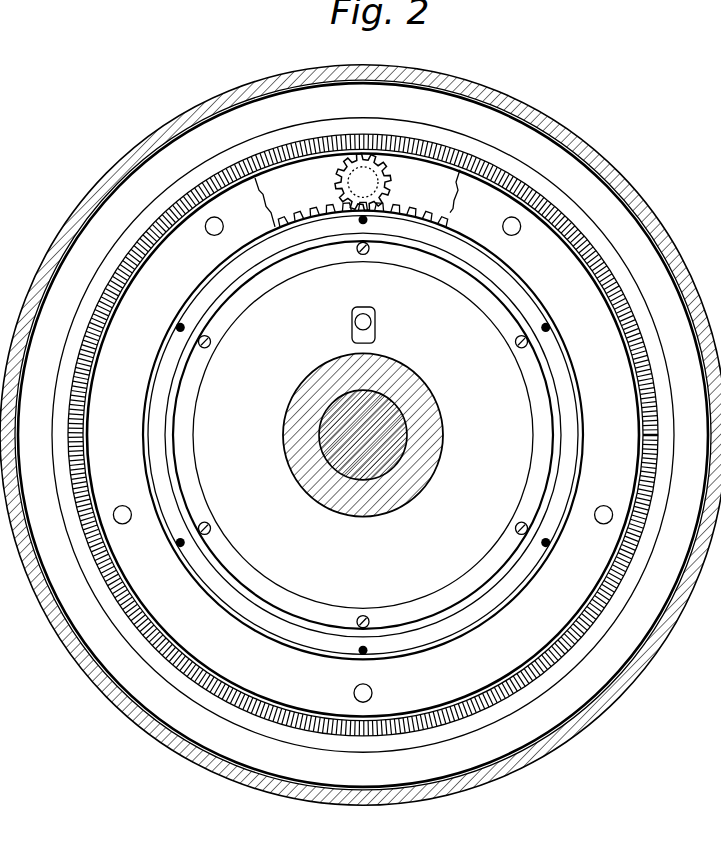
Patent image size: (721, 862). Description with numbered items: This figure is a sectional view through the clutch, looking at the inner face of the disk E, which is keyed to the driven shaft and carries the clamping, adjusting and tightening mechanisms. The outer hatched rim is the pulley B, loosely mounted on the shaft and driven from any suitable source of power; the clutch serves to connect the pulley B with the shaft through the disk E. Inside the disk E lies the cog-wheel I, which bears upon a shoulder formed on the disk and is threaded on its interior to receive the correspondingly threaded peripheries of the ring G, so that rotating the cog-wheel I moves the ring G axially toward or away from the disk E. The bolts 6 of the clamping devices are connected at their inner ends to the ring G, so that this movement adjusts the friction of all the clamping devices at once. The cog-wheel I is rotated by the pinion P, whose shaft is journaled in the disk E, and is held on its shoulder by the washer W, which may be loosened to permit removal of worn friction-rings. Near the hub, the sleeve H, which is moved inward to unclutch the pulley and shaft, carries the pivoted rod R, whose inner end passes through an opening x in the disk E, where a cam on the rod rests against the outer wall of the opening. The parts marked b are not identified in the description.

The pulley B is at (360, 445).
The disk E is at (363, 436).
The cog-wheel I is at (363, 428).
The pinion P is at (344, 181).
The ring G is at (346, 451).
The screws b is at (363, 435).
The washer W is at (363, 435).
The rod R is at (381, 325).
The opening x is at (347, 331).
The sleeve H is at (331, 435).
The bolts 6 is at (362, 459).